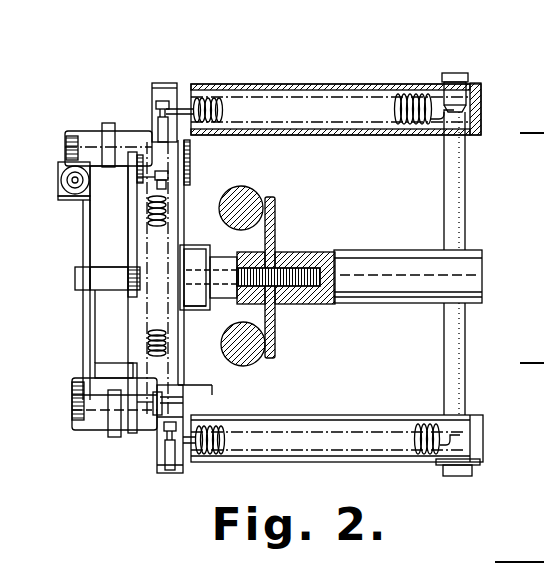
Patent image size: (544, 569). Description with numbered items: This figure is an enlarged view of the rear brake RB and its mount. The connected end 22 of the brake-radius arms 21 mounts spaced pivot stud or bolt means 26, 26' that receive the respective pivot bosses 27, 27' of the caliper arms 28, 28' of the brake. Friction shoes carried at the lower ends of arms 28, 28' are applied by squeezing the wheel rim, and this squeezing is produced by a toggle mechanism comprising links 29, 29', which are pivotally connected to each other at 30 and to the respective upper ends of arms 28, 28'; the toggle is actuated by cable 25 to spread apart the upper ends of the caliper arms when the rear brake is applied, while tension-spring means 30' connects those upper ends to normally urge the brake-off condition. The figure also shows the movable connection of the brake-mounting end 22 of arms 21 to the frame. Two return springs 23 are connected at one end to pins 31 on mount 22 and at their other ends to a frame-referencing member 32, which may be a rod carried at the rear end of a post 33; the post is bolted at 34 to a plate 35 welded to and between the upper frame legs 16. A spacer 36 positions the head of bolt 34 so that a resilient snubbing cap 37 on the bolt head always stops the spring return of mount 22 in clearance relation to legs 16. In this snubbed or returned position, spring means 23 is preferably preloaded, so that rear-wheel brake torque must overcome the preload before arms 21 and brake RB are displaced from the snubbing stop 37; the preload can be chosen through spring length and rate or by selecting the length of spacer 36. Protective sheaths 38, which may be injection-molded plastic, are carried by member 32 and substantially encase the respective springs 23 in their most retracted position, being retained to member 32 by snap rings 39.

The upper frame legs 16 is at (250, 192).
The brake-radius arms 21 is at (166, 83).
The connected end of the brake-radius arms 22 is at (178, 208).
The return springs 23 is at (410, 94).
The cable 25 is at (63, 212).
The pivot stud or bolt means 26 is at (196, 183).
The pivot stud or bolt means 26' is at (199, 396).
The pivot boss 27 is at (129, 178).
The pivot boss 27' is at (133, 427).
The caliper arm 28 is at (107, 129).
The caliper arm 28' is at (114, 421).
The toggle link 29 is at (105, 283).
The toggle link 29' is at (58, 284).
The pivotal connection of the toggle links 30 is at (115, 315).
The tension-spring means 30' is at (132, 340).
The pins 31 is at (156, 122).
The frame-referencing member 32 is at (445, 222).
The post 33 is at (378, 252).
The bolt 34 is at (317, 262).
The plate 35 is at (277, 225).
The spacer 36 is at (222, 258).
The resilient snubbing cap 37 is at (193, 312).
The protective sheaths 38 is at (284, 86).
The snap rings 39 is at (434, 76).
The rear brake RB is at (68, 450).